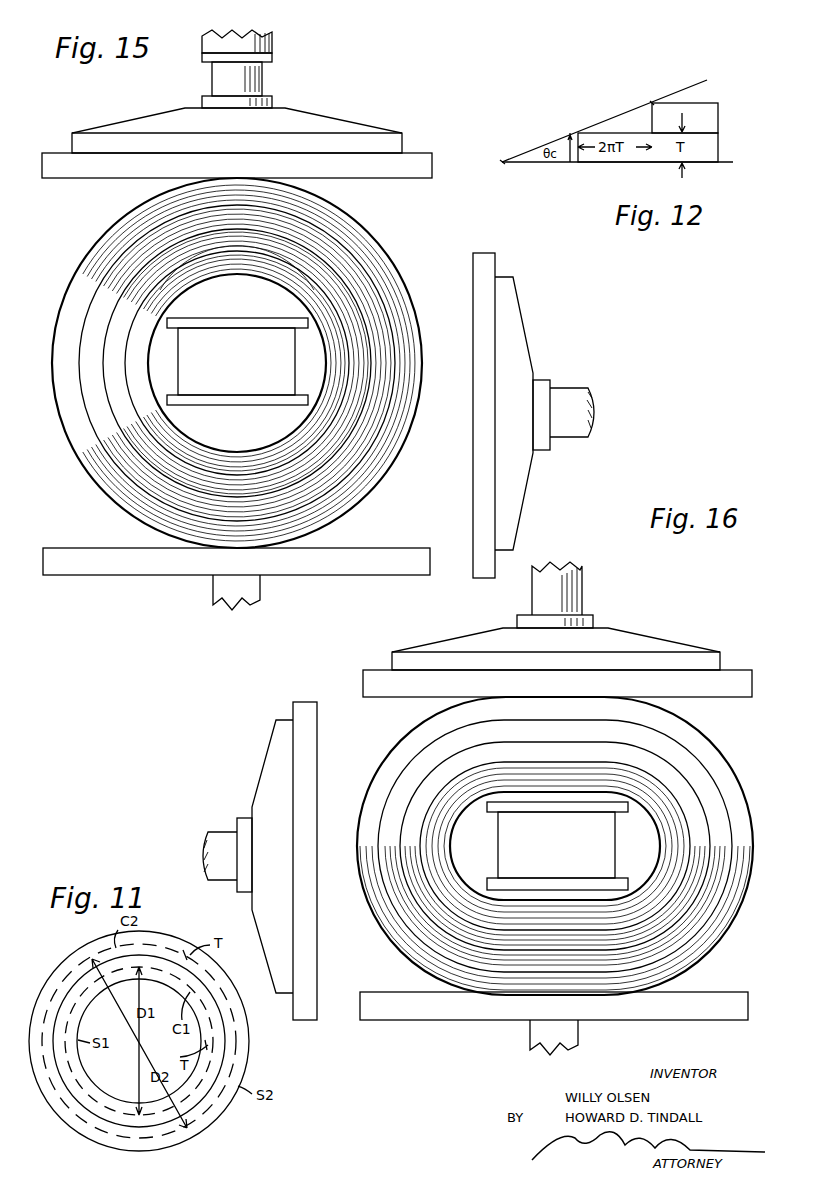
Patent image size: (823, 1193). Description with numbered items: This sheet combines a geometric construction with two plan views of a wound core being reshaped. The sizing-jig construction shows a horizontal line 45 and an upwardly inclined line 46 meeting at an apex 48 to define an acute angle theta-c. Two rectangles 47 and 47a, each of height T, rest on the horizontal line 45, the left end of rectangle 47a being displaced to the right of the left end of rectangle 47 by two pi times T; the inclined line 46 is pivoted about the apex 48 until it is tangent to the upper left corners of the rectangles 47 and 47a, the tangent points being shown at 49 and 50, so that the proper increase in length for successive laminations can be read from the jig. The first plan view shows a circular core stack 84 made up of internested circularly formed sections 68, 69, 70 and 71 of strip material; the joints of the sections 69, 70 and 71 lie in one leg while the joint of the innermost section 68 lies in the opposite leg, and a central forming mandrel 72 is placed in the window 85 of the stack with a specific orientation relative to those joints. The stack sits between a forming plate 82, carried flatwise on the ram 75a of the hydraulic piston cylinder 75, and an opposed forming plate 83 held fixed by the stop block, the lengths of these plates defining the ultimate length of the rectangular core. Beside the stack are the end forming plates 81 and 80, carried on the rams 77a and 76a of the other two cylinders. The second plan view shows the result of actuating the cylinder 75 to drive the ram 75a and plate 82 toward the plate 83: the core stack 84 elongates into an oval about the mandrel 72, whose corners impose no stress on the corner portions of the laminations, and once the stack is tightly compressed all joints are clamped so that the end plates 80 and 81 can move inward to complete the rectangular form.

In FIG. 15, the hydraulically actuated piston cylinder 75 is at (272, 45).
In FIG. 16, the hydraulically actuated piston cylinder 75 is at (555, 595).
In FIG. 15, the ram 75a is at (315, 120).
In FIG. 16, the ram 75a is at (630, 634).
In FIG. 15, the forming plate 82 is at (375, 172).
In FIG. 16, the forming plate 82 is at (386, 690).
In FIG. 15, the forming plate 83 is at (378, 562).
In FIG. 16, the forming plate 83 is at (450, 1015).
In FIG. 15, the circular core stack 84 is at (90, 474).
In FIG. 16, the circular core stack 84 is at (410, 957).
In FIG. 15, the window 85 is at (318, 356).
In FIG. 15, the core section 70 is at (94, 302).
In FIG. 15, the core section 71 is at (70, 338).
In FIG. 15, the core section 68 is at (188, 278).
In FIG. 15, the core section 69 is at (120, 328).
In FIG. 15, the central forming mandrel 72 is at (252, 390).
In FIG. 16, the central forming mandrel 72 is at (612, 838).
In FIG. 15, the forming plate 81 is at (476, 470).
In FIG. 15, the ram 77a is at (528, 362).
In FIG. 16, the forming plate 80 is at (310, 755).
In FIG. 16, the ram 76a is at (248, 786).
In FIG. 12, the horizontal line 45 is at (540, 163).
In FIG. 12, the inclined line 46 is at (612, 118).
In FIG. 12, the rectangle 47 is at (718, 147).
In FIG. 12, the rectangle 47a is at (718, 112).
In FIG. 12, the apex 48 is at (503, 162).
In FIG. 12, the tangent point 49 is at (578, 133).
In FIG. 12, the tangent point 50 is at (654, 103).